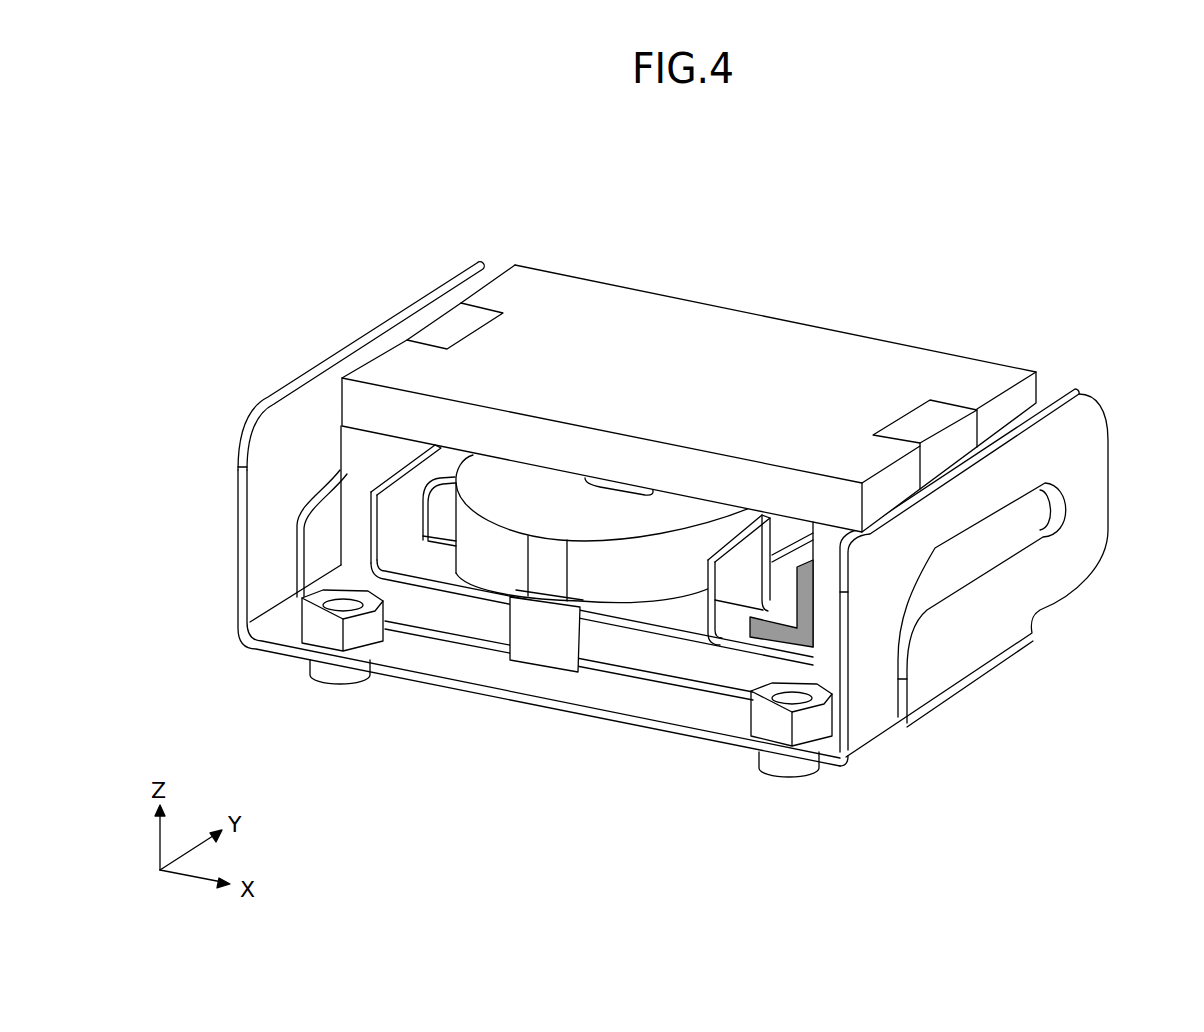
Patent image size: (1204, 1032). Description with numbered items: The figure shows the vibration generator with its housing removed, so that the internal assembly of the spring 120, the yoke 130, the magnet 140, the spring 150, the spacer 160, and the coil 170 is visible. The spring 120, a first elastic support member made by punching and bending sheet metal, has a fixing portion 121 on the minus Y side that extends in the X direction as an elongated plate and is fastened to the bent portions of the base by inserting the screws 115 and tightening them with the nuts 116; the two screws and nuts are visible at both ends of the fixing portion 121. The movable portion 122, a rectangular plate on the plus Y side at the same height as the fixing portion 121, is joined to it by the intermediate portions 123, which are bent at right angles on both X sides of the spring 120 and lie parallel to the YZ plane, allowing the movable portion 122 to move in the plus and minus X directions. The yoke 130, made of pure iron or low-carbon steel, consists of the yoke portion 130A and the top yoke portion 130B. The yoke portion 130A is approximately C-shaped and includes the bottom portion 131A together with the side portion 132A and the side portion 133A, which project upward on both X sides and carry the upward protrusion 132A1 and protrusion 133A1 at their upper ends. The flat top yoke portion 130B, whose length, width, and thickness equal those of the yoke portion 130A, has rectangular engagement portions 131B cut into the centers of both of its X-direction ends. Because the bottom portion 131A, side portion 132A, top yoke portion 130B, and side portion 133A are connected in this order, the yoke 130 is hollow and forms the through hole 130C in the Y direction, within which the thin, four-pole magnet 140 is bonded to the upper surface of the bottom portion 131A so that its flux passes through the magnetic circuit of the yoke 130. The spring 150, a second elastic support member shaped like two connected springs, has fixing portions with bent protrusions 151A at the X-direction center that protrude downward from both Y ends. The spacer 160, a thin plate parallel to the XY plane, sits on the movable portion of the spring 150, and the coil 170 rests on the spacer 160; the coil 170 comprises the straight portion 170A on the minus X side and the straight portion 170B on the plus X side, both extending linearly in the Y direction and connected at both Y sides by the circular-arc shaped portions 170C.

The screws 115 is at (788, 777).
The nuts 116 is at (820, 727).
The spring 120 is at (715, 549).
The fixing portion 121 is at (575, 693).
The movable portion 122 is at (655, 673).
The intermediate portions 123 is at (1083, 484).
The yoke 130 is at (689, 381).
The yoke portion 130A is at (818, 549).
The top yoke portion 130B is at (818, 308).
The through hole 130C is at (407, 458).
The bottom portion 131A is at (464, 607).
The engagement portions 131B is at (466, 303).
The side portion 132A is at (357, 478).
The protrusion 132A1 is at (445, 330).
The side portion 133A is at (838, 626).
The protrusion 133A1 is at (925, 428).
The magnet 140 is at (790, 600).
The spring 150 is at (410, 565).
The protrusions 151A is at (528, 653).
The spacer 160 is at (450, 538).
The coil 170 is at (609, 485).
The straight portion 170A is at (497, 477).
The straight portion 170B is at (693, 517).
The circular-arc shaped portions 170C is at (567, 507).